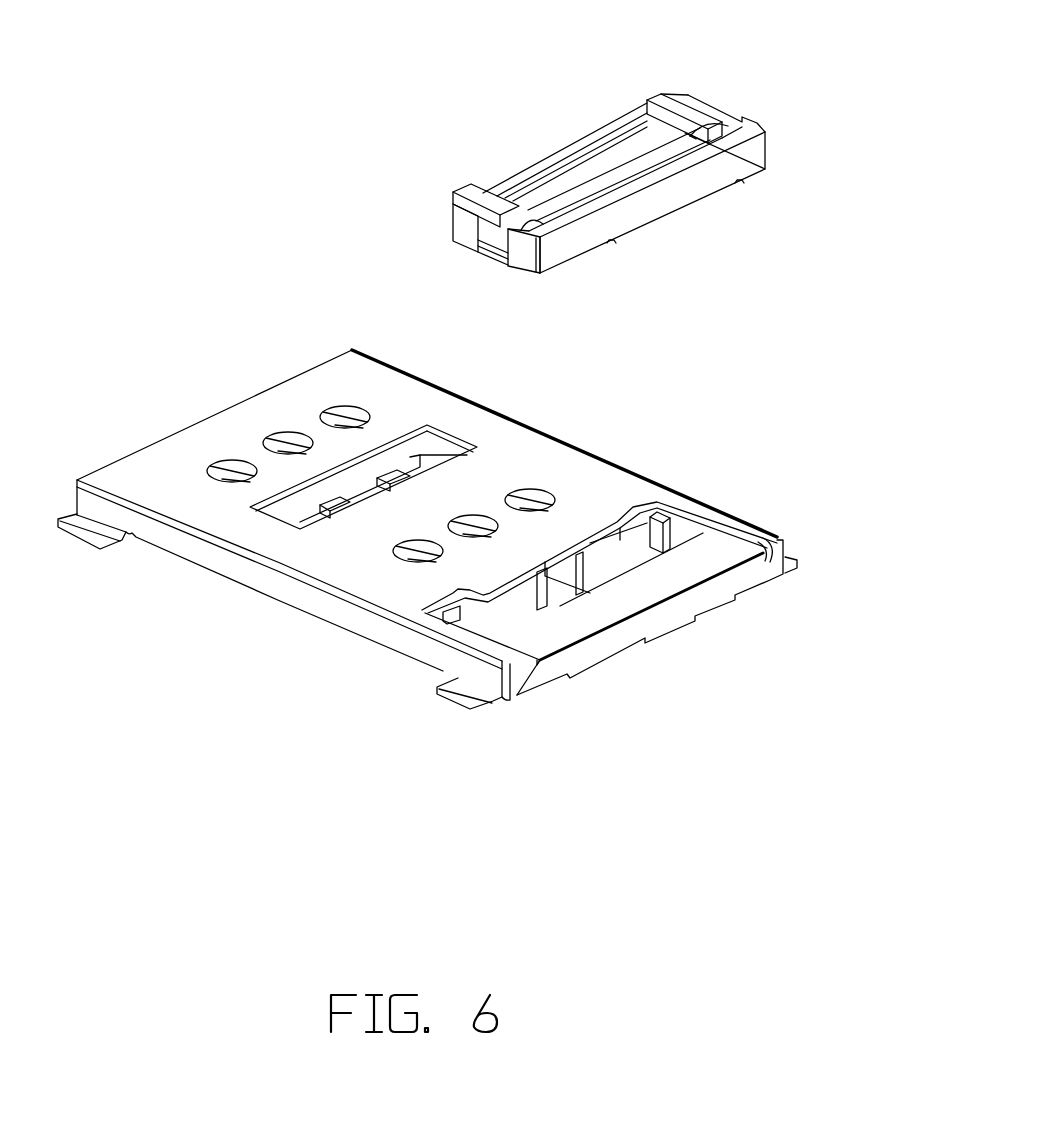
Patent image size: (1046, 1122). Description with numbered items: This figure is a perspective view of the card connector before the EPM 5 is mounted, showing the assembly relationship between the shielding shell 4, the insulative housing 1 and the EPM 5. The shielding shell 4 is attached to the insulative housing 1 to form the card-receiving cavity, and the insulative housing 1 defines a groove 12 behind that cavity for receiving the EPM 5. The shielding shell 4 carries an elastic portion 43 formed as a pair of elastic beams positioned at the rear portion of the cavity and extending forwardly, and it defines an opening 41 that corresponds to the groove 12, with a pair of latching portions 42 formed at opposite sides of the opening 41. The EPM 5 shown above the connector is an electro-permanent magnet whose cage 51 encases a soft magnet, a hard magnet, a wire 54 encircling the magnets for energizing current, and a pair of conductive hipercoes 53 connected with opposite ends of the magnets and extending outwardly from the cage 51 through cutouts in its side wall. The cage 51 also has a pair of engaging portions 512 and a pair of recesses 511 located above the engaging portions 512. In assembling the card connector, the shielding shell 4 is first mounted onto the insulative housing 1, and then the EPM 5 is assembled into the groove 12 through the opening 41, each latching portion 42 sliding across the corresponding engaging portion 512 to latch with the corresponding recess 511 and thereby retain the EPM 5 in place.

The insulative housing 1 is at (647, 555).
The groove 12 is at (567, 617).
The shielding shell 4 is at (520, 458).
The opening 41 is at (677, 575).
The latching portions 42 is at (733, 547).
The elastic portion 43 is at (517, 590).
The EPM 5 is at (765, 147).
The cage 51 is at (550, 253).
The recesses 511 is at (497, 225).
The engaging portions 512 is at (488, 248).
The hipercoes 53 is at (662, 102).
The wire 54 is at (687, 133).